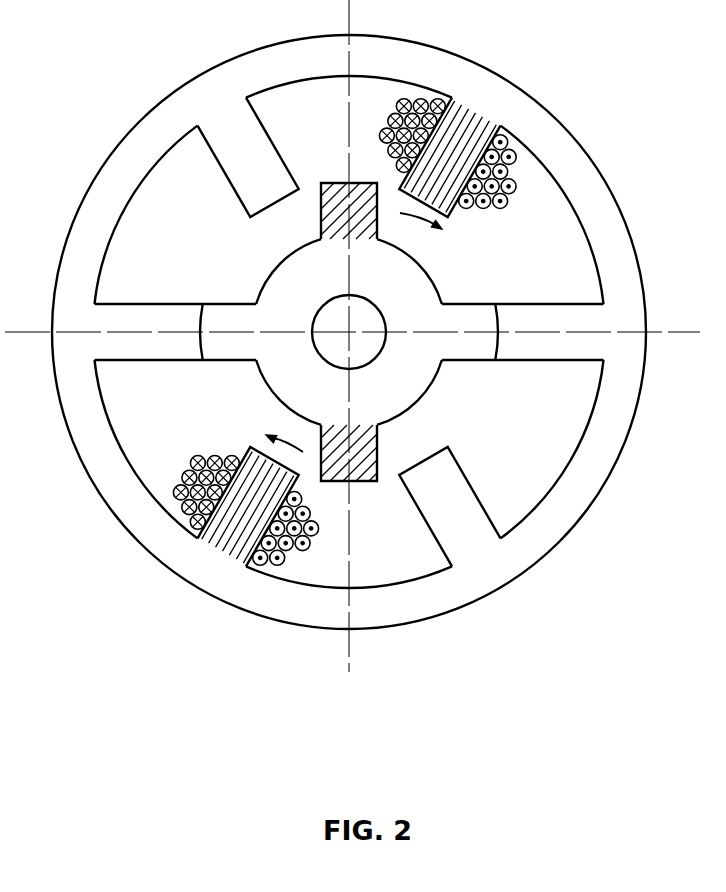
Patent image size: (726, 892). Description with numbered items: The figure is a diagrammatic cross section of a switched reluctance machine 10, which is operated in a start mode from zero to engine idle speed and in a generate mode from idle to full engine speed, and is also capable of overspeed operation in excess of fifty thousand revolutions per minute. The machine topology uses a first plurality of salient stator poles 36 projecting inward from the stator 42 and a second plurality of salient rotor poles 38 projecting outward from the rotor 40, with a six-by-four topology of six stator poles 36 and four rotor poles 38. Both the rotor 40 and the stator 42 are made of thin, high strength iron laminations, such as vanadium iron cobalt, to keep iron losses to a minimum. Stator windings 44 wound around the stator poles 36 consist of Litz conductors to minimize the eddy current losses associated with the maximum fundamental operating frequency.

The switched reluctance machine 10 is at (560, 80).
The salient stator poles 36 is at (475, 132).
The salient rotor poles 38 is at (322, 213).
The rotor 40 is at (325, 296).
The stator 42 is at (323, 36).
The stator windings 44 is at (493, 203).